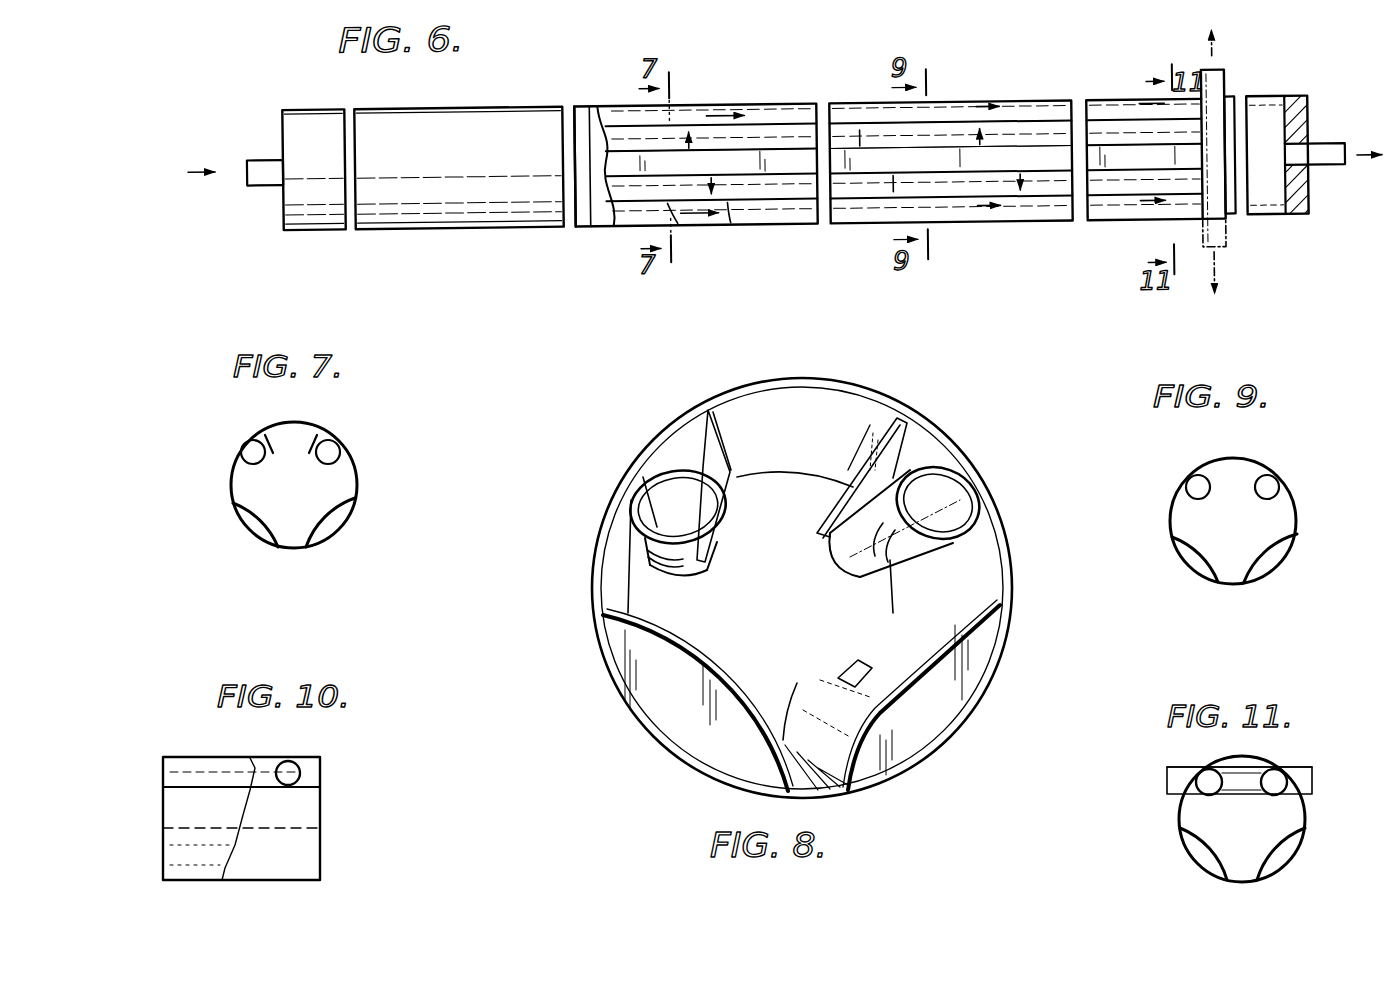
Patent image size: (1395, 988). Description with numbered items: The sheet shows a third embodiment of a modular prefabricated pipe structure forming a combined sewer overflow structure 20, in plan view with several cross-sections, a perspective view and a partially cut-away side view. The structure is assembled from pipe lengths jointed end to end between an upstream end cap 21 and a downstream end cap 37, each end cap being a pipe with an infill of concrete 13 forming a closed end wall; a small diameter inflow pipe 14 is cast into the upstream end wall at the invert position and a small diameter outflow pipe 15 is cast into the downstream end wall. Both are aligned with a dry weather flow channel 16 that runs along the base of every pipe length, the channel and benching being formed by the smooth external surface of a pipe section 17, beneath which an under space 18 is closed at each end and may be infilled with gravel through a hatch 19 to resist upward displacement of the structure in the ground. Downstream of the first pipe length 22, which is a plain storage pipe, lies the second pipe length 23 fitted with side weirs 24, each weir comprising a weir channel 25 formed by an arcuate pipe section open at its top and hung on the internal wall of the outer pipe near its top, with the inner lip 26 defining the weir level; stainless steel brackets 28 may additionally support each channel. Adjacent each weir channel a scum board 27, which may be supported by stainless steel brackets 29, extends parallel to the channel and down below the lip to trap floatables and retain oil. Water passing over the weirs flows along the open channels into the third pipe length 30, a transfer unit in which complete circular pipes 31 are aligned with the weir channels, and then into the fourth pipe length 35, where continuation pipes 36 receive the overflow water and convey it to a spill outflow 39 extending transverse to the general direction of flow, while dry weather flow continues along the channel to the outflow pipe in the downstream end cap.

In FIG. 6, the infill of concrete 13 is at (1300, 111).
In FIG. 6, the inflow pipe 14 is at (260, 158).
In FIG. 6, the outflow pipe 15 is at (1327, 165).
In FIG. 6, the dry weather flow channel 16 is at (590, 227).
In FIG. 6, the pipe section 17 is at (1038, 160).
In FIG. 7, the pipe section 17 is at (257, 493).
In FIG. 9, the pipe section 17 is at (1247, 552).
In FIG. 10, the pipe section 17 is at (178, 860).
In FIG. 11, the pipe section 17 is at (1270, 845).
In FIG. 8, the pipe section 17 is at (680, 630).
In FIG. 7, the under space 18 is at (255, 530).
In FIG. 9, the under space 18 is at (1195, 568).
In FIG. 11, the under space 18 is at (1200, 853).
In FIG. 8, the under space 18 is at (675, 688).
In FIG. 8, the hatch 19 is at (857, 660).
In FIG. 6, the combined sewer overflow structure 20 is at (787, 95).
In FIG. 6, the upstream end cap 21 is at (300, 105).
In FIG. 6, the first pipe length 22 is at (383, 226).
In FIG. 6, the second pipe length 23 is at (583, 105).
In FIG. 7, the second pipe length 23 is at (288, 422).
In FIG. 8, the second pipe length 23 is at (592, 578).
In FIG. 6, the side weir 24 is at (700, 120).
In FIG. 7, the side weir 24 is at (240, 466).
In FIG. 8, the side weir 24 is at (657, 553).
In FIG. 6, the weir channel 25 is at (760, 114).
In FIG. 8, the weir channel 25 is at (678, 497).
In FIG. 6, the inner lip 26 is at (620, 126).
In FIG. 8, the inner lip 26 is at (690, 485).
In FIG. 7, the scum board 27 is at (251, 437).
In FIG. 8, the scum board 27 is at (730, 422).
In FIG. 8, the stainless steel bracket 28 is at (832, 558).
In FIG. 8, the stainless steel bracket 29 is at (847, 472).
In FIG. 6, the third pipe length 30 is at (963, 104).
In FIG. 9, the third pipe length 30 is at (1225, 458).
In FIG. 6, the circular pipe 31 is at (855, 112).
In FIG. 9, the circular pipe 31 is at (1178, 488).
In FIG. 6, the fourth pipe length 35 is at (1128, 104).
In FIG. 10, the fourth pipe length 35 is at (180, 757).
In FIG. 11, the fourth pipe length 35 is at (1180, 837).
In FIG. 6, the continuation pipe 36 is at (1103, 108).
In FIG. 10, the continuation pipe 36 is at (163, 773).
In FIG. 11, the continuation pipe 36 is at (1247, 777).
In FIG. 6, the downstream end cap 37 is at (1260, 103).
In FIG. 6, the spill outflow 39 is at (1200, 76).
In FIG. 10, the spill outflow 39 is at (258, 767).
In FIG. 11, the spill outflow 39 is at (1183, 767).